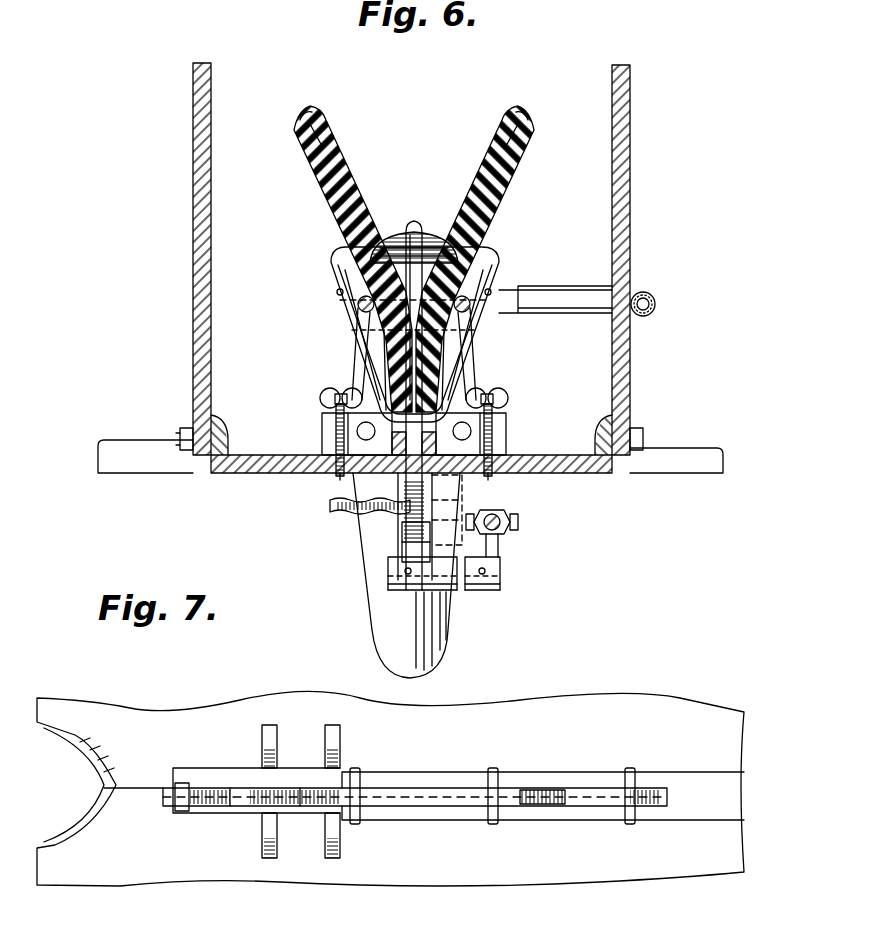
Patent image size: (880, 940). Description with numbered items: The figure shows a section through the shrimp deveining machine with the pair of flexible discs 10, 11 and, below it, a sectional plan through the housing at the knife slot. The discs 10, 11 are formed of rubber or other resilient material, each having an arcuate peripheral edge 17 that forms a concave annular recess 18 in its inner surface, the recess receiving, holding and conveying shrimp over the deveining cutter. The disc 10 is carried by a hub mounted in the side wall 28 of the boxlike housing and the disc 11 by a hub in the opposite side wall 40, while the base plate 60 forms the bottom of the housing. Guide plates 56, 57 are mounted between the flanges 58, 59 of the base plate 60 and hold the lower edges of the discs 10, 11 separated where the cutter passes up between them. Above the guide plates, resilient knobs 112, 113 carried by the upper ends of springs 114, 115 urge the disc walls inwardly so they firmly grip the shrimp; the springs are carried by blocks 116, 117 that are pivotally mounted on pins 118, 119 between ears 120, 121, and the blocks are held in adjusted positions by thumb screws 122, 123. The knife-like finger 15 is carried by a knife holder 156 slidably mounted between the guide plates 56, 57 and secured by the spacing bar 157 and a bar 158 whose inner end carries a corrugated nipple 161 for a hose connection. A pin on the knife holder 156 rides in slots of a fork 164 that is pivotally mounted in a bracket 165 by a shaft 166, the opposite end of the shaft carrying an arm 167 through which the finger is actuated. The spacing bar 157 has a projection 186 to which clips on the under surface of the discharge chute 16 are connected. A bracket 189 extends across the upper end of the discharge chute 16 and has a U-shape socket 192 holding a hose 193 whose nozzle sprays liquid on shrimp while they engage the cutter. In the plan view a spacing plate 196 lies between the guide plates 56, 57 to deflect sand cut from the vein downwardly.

In FIG. 6, the flexible disc 10 is at (529, 174).
In FIG. 6, the flexible disc 11 is at (300, 188).
In FIG. 6, the knife-like finger 15 is at (384, 368).
In FIG. 6, the discharge chute 16 is at (448, 632).
In FIG. 6, the arcuate peripheral edge 17 is at (310, 124).
In FIG. 6, the concave annular recess 18 is at (318, 142).
In FIG. 6, the side wall 28 is at (630, 152).
In FIG. 6, the side wall 40 is at (193, 183).
In FIG. 6, the guide plate 56 is at (456, 492).
In FIG. 7, the guide plate 56 is at (412, 788).
In FIG. 6, the guide plate 57 is at (397, 477).
In FIG. 7, the guide plate 57 is at (400, 808).
In FIG. 7, the flange 58 is at (468, 772).
In FIG. 7, the flange 59 is at (468, 822).
In FIG. 6, the base plate 60 is at (238, 473).
In FIG. 7, the base plate 60 is at (246, 700).
In FIG. 6, the resilient knob 112 is at (470, 308).
In FIG. 6, the resilient knob 113 is at (356, 304).
In FIG. 6, the spring 114 is at (470, 352).
In FIG. 6, the spring 115 is at (356, 350).
In FIG. 6, the block 116 is at (506, 420).
In FIG. 6, the block 117 is at (322, 420).
In FIG. 6, the pin 118 is at (472, 434).
In FIG. 6, the pin 119 is at (357, 433).
In FIG. 6, the ears 120 is at (488, 478).
In FIG. 7, the ears 120 is at (262, 735).
In FIG. 6, the ears 121 is at (340, 478).
In FIG. 7, the ears 121 is at (262, 860).
In FIG. 6, the thumb screw 122 is at (500, 400).
In FIG. 6, the thumb screw 123 is at (322, 400).
In FIG. 6, the knife holder 156 is at (402, 520).
In FIG. 7, the spacing bar 157 is at (232, 808).
In FIG. 7, the bar 158 is at (300, 808).
In FIG. 6, the corrugated nipple 161 is at (334, 510).
In FIG. 6, the fork 164 is at (388, 563).
In FIG. 6, the bracket 165 is at (420, 600).
In FIG. 6, the shaft 166 is at (500, 577).
In FIG. 6, the arm 167 is at (502, 542).
In FIG. 7, the projection 186 is at (168, 800).
In FIG. 6, the bracket 189 is at (494, 258).
In FIG. 6, the U-shape socket 192 is at (414, 221).
In FIG. 6, the hose 193 is at (389, 241).
In FIG. 7, the spacing plate 196 is at (535, 808).